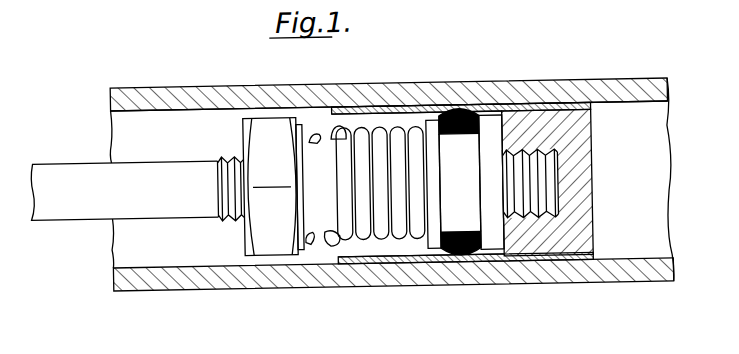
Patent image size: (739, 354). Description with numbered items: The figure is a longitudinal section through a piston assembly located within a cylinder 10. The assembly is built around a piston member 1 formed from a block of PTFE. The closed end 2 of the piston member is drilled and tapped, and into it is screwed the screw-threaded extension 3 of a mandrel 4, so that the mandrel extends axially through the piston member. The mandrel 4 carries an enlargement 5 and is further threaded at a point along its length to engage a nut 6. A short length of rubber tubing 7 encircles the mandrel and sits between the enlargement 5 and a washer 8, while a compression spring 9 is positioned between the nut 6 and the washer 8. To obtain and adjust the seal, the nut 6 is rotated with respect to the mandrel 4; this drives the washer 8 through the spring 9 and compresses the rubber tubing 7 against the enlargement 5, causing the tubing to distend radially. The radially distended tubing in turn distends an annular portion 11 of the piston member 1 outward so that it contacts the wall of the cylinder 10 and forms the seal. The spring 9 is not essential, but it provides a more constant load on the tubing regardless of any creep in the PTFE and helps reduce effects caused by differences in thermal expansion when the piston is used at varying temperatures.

The piston member 1 is at (349, 121).
The closed end 2 is at (585, 118).
The screw-threaded extension 3 is at (520, 167).
The mandrel 4 is at (96, 178).
The enlargement 5 is at (494, 247).
The nut 6 is at (266, 253).
The rubber tubing 7 is at (447, 261).
The washer 8 is at (436, 134).
The compression spring 9 is at (357, 242).
The cylinder 10 is at (236, 88).
The annular portion 11 is at (458, 116).